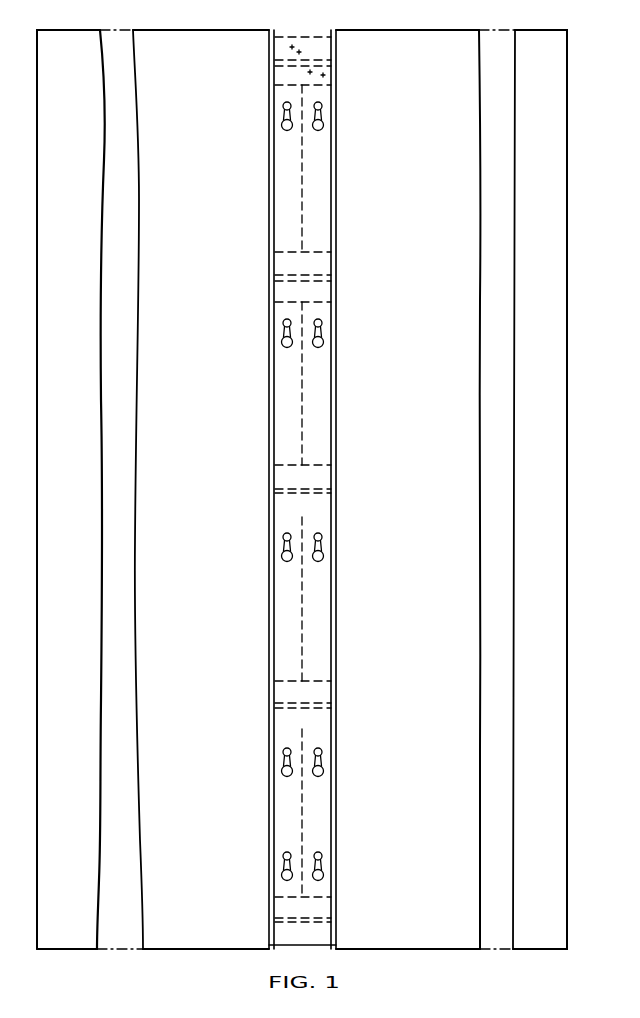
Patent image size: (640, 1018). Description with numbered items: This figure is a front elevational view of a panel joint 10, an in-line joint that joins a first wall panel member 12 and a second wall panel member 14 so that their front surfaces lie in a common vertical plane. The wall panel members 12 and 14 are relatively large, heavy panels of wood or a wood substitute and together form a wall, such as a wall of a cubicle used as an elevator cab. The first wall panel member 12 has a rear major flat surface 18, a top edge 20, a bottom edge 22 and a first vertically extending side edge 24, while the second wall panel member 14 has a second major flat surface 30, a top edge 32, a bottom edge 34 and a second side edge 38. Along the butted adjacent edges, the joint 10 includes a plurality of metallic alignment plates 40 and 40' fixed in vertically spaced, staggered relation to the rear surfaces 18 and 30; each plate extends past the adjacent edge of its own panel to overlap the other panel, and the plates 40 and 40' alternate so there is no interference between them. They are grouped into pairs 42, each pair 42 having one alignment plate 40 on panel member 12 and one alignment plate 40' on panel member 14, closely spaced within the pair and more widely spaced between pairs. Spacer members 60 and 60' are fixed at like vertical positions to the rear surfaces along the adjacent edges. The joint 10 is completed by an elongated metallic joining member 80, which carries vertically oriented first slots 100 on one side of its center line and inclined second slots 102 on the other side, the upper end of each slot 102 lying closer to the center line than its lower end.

The panel joint 10 is at (343, 178).
The first wall panel member 12 is at (37, 108).
The second wall panel member 14 is at (568, 108).
The rear major flat surface 18 is at (40, 195).
The top edge 20 is at (186, 28).
The bottom edge 22 is at (224, 950).
The first side edge 24 is at (37, 68).
The second major flat surface 30 is at (558, 230).
The top edge 32 is at (420, 28).
The bottom edge 34 is at (438, 950).
The second side edge 38 is at (567, 170).
The alignment plate 40 is at (283, 153).
The alignment plate 40' is at (327, 486).
The pair of alignment plates 42 is at (272, 70).
The spacer member 60 is at (263, 113).
The spacer member 60' is at (347, 113).
The joining member 80 is at (373, 225).
The first elongated slot 100 is at (282, 128).
The second elongated slot 102 is at (323, 124).